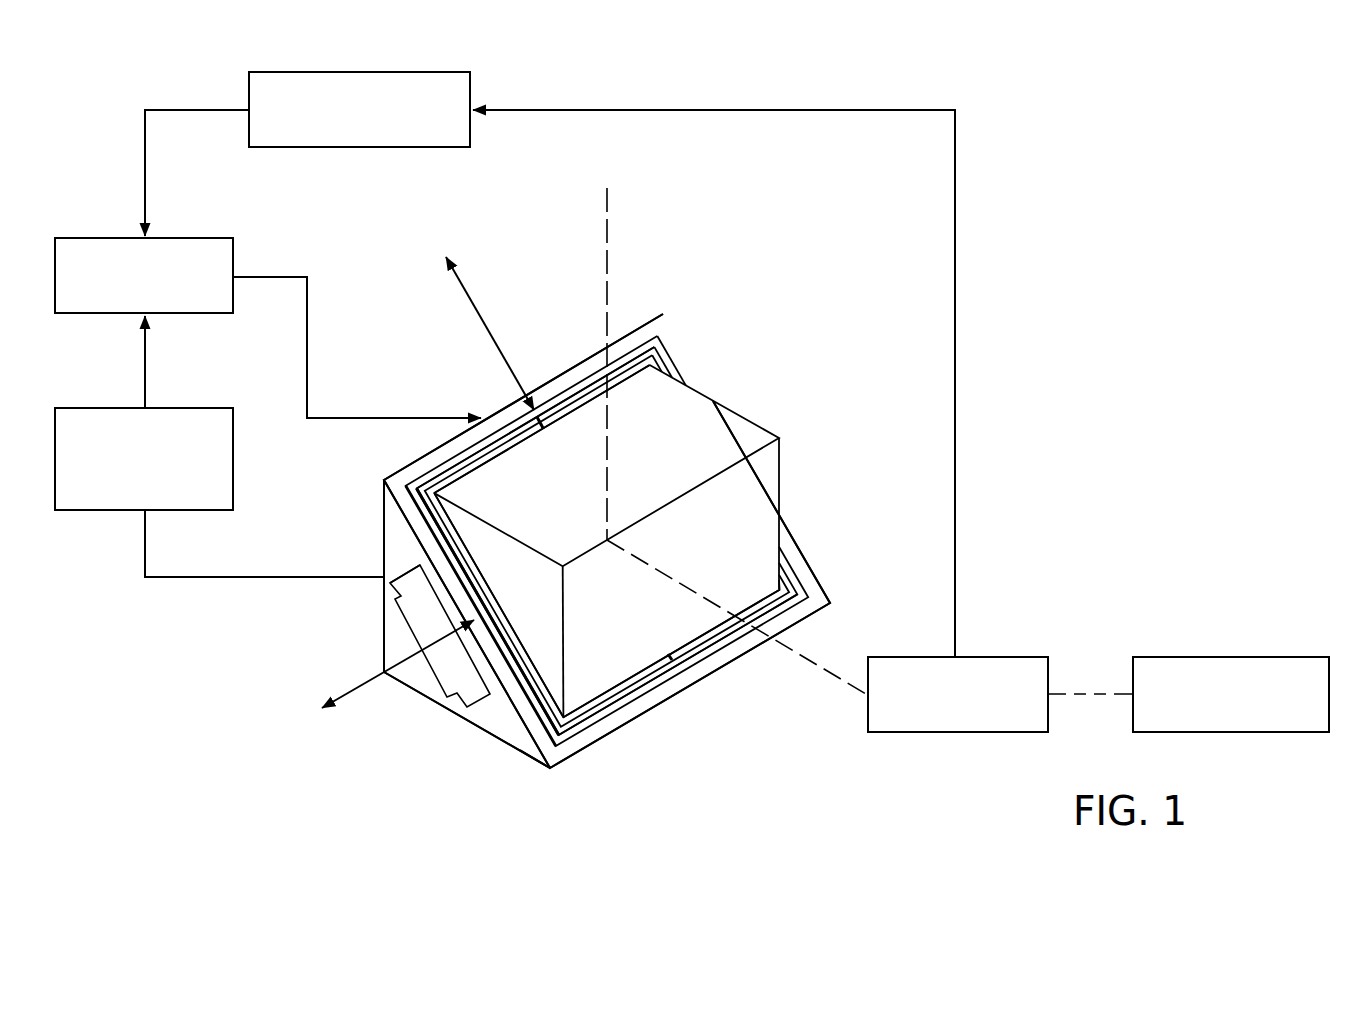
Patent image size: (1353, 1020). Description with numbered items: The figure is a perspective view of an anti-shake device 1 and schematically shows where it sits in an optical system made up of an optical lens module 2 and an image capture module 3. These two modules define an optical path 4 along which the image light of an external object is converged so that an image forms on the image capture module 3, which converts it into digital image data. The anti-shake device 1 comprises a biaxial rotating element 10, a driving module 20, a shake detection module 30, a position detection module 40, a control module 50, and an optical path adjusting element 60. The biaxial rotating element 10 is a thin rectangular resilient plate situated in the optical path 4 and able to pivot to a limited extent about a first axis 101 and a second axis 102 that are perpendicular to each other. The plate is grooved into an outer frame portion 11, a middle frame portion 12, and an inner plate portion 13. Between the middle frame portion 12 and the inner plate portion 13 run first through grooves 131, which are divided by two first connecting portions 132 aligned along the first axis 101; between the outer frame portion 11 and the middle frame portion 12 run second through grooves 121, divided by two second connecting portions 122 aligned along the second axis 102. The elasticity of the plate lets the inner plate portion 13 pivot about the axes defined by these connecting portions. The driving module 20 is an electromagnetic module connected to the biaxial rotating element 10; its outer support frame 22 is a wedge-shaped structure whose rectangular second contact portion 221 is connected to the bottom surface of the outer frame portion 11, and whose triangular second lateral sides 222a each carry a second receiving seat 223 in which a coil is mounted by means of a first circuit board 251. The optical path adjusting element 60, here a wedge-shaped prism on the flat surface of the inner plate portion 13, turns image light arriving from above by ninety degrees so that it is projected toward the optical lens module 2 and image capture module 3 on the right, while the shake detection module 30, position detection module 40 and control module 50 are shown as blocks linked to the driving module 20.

The anti-shake device 1 is at (810, 514).
The optical lens module 2 is at (980, 657).
The image capture module 3 is at (1255, 657).
The optical path 4 is at (608, 270).
The biaxial rotating element 10 is at (814, 567).
The outer frame portion 11 is at (800, 613).
The middle frame portion 12 is at (730, 637).
The second through groove 121 is at (558, 393).
The second connecting portion 122 is at (490, 624).
The inner plate portion 13 is at (557, 768).
The first through groove 131 is at (590, 397).
The first connecting portion 132 is at (537, 425).
The driving module 20 is at (370, 526).
The outer support frame 22 is at (385, 643).
The second contact portion 221 is at (538, 766).
The second lateral side 222a is at (515, 742).
The second receiving seat 223 is at (433, 667).
The first circuit board 251 is at (417, 613).
The shake detection module 30 is at (370, 72).
The position detection module 40 is at (200, 408).
The control module 50 is at (203, 238).
The optical path adjusting element 60 is at (737, 418).
The first axis 101 is at (468, 290).
The second axis 102 is at (358, 690).